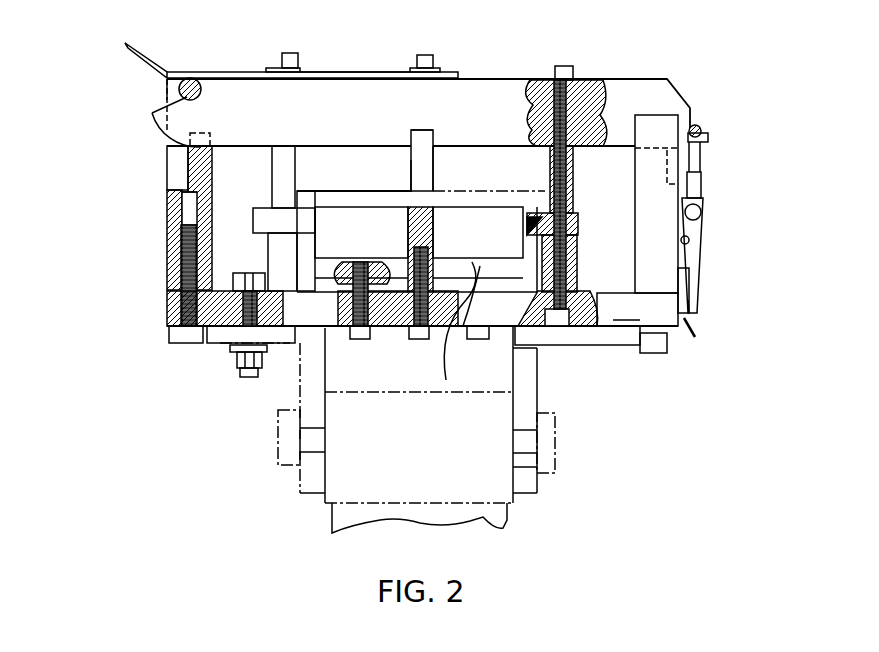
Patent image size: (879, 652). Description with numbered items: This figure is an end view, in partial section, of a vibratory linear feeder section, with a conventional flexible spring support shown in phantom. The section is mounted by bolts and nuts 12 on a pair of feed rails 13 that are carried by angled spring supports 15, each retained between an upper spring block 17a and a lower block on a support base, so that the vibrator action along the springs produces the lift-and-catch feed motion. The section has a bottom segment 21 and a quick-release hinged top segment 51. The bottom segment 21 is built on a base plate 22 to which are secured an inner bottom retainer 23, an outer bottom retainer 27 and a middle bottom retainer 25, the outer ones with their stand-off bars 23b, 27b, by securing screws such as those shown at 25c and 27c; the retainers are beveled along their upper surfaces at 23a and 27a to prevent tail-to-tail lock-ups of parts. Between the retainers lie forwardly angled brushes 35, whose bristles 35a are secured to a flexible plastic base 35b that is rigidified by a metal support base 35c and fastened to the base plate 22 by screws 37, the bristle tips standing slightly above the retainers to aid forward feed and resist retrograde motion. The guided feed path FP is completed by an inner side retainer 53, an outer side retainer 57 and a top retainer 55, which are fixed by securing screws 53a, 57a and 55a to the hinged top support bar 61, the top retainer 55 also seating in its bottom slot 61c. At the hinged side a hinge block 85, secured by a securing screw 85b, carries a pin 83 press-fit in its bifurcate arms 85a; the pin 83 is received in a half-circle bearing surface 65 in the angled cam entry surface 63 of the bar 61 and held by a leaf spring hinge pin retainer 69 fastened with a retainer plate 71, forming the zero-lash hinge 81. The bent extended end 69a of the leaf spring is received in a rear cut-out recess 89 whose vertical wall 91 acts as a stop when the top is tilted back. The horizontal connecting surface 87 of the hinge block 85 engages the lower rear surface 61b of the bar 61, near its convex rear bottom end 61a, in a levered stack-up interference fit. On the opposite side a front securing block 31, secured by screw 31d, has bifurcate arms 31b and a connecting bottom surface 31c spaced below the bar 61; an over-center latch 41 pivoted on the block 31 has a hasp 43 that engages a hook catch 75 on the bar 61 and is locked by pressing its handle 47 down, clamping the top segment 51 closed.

The bolts and nuts 12 is at (233, 356).
The feed rails 13 is at (302, 470).
The spring supports 15 is at (505, 522).
The upper spring block 17a is at (487, 451).
The bottom segment 21 is at (696, 321).
The base plate 22 is at (297, 345).
The inner bottom retainer 23 is at (265, 206).
The bevel 23a is at (311, 207).
The stand-off bar 23b is at (277, 263).
The middle bottom retainer 25 is at (433, 163).
The securing screw 25c is at (411, 336).
The outer bottom retainer 27 is at (580, 212).
The bevel 27a is at (543, 207).
The stand-off bar 27b is at (574, 258).
The securing screw 27c is at (580, 347).
The front securing block 31 is at (676, 231).
The bifurcate arms 31b is at (659, 117).
The connecting bottom surface 31c is at (703, 183).
The securing screw 31d is at (662, 351).
The brushes 35 is at (372, 241).
The bristles 35a is at (348, 206).
The flexible plastic base 35b is at (466, 340).
The metal support base 35c is at (465, 327).
The screws 37 is at (356, 338).
The over-center latch 41 is at (705, 251).
The latch bar or hasp 43 is at (700, 127).
The over-center pivoted handle 47 is at (697, 296).
The hinged top segment 51 is at (634, 77).
The inner side retainer 53 is at (273, 162).
The securing screw 53a is at (286, 53).
The top retainer 55 is at (435, 150).
The securing screw 55a is at (418, 55).
The outer side retainer 57 is at (571, 161).
The securing screw 57a is at (562, 65).
The hinged top support bar 61 is at (481, 78).
The convex rear bottom end 61a is at (164, 134).
The lower rear surface 61b is at (232, 146).
The bottom slot 61c is at (412, 134).
The angled cam entry surface 63 is at (162, 106).
The half-circle bearing surface 65 is at (202, 90).
The leaf spring hinge pin retainer 69 is at (215, 72).
The extended end 69a is at (128, 44).
The retainer plate 71 is at (336, 70).
The hook catch 75 is at (709, 138).
The hinge 81 is at (224, 54).
The pin 83 is at (178, 90).
The hinge block 85 is at (173, 219).
The bifurcate arms 85a is at (166, 80).
The securing screw 85b is at (172, 334).
The horizontal connecting surface 87 is at (203, 133).
The rear cut-out recess 89 is at (176, 152).
The vertical wall 91 is at (194, 170).
The feed path FP is at (413, 183).